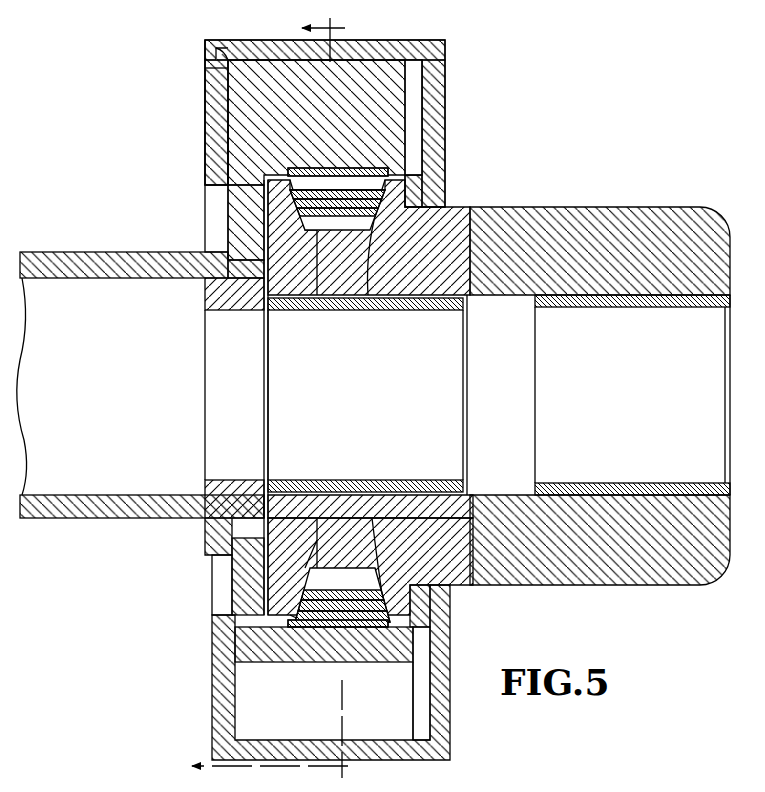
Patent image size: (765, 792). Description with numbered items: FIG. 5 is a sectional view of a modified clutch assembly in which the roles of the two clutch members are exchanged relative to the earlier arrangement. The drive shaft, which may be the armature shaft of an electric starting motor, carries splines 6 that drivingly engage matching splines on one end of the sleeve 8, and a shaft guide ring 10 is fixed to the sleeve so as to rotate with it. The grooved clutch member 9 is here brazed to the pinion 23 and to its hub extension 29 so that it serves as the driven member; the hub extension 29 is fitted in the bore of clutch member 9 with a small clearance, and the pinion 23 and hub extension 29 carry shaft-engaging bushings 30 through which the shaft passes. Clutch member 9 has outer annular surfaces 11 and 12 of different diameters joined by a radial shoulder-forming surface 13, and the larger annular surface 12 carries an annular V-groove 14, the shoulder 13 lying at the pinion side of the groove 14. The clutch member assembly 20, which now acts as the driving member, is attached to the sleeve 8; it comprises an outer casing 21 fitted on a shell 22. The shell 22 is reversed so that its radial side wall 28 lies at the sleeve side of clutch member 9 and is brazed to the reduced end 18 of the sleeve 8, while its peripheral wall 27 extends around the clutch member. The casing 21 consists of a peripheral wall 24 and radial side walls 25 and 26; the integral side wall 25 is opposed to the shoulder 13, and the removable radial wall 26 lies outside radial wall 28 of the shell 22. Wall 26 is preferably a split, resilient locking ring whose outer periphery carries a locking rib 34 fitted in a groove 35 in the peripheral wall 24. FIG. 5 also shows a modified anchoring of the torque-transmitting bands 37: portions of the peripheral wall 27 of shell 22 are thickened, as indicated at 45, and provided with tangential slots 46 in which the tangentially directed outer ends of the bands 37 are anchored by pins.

The splines 6 is at (258, 398).
The sleeve 8 is at (98, 252).
The clutch member 9 is at (482, 212).
The shaft guide ring 10 is at (200, 300).
The outer annular surface 11 is at (447, 210).
The outer annular surface 12 is at (440, 180).
The shoulder-forming surface 13 is at (384, 215).
The annular V-groove 14 is at (326, 240).
The reduced end 18 is at (262, 290).
The clutch member assembly 20 is at (186, 62).
The outer casing 21 is at (321, 112).
The shell 22 is at (207, 140).
The pinion 23 is at (640, 207).
The peripheral wall 24 is at (380, 60).
The radial side wall 25 is at (446, 100).
The radial side wall 26 is at (212, 93).
The peripheral wall 27 is at (262, 664).
The radial side wall 28 is at (215, 200).
The hub extension 29 is at (400, 300).
The shaft-engaging bushings 30 is at (445, 306).
The locking rib 34 is at (212, 68).
The groove 35 is at (214, 52).
The torque-transmitting bands 37 is at (362, 168).
The thickened portions 45 is at (420, 120).
The tangential slots 46 is at (400, 176).